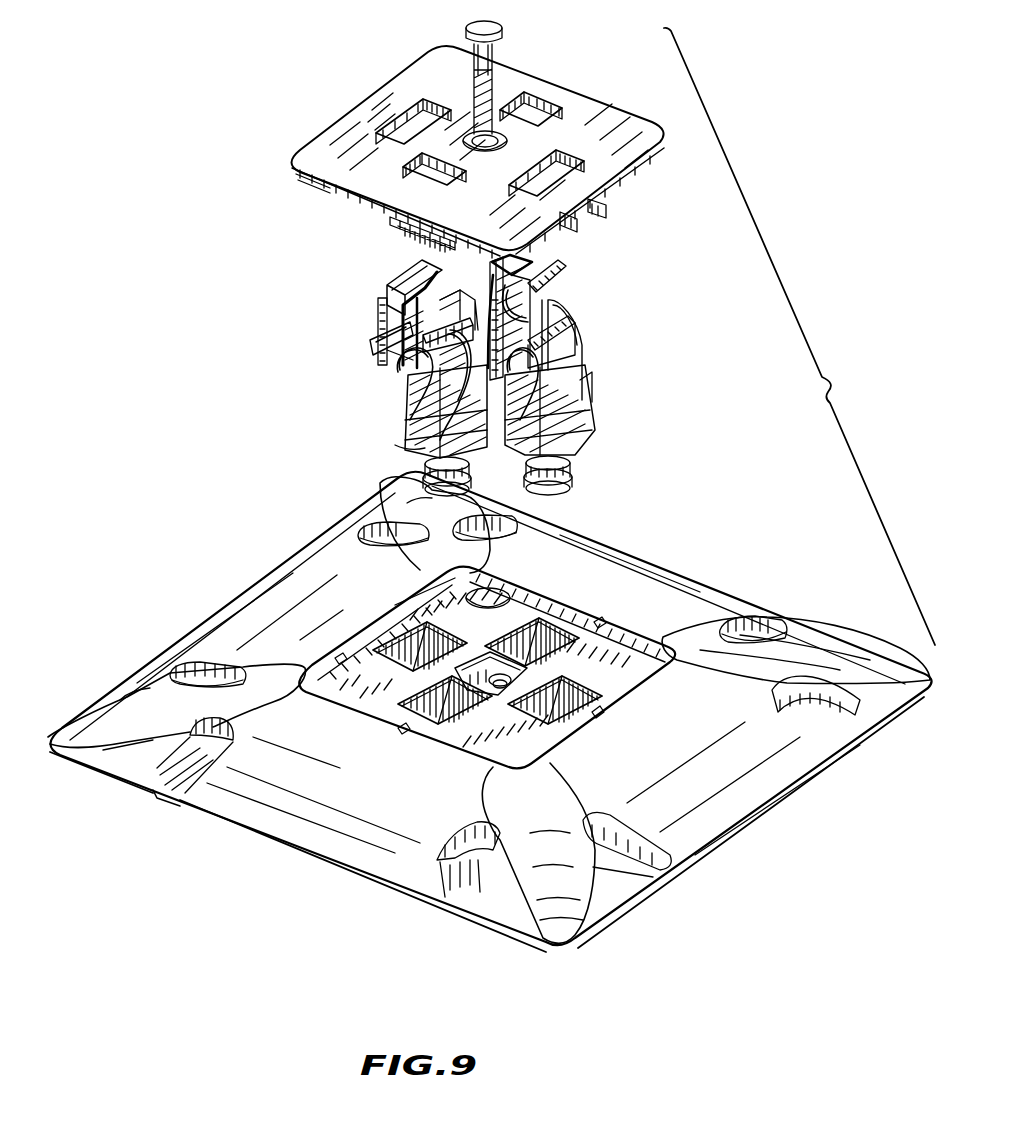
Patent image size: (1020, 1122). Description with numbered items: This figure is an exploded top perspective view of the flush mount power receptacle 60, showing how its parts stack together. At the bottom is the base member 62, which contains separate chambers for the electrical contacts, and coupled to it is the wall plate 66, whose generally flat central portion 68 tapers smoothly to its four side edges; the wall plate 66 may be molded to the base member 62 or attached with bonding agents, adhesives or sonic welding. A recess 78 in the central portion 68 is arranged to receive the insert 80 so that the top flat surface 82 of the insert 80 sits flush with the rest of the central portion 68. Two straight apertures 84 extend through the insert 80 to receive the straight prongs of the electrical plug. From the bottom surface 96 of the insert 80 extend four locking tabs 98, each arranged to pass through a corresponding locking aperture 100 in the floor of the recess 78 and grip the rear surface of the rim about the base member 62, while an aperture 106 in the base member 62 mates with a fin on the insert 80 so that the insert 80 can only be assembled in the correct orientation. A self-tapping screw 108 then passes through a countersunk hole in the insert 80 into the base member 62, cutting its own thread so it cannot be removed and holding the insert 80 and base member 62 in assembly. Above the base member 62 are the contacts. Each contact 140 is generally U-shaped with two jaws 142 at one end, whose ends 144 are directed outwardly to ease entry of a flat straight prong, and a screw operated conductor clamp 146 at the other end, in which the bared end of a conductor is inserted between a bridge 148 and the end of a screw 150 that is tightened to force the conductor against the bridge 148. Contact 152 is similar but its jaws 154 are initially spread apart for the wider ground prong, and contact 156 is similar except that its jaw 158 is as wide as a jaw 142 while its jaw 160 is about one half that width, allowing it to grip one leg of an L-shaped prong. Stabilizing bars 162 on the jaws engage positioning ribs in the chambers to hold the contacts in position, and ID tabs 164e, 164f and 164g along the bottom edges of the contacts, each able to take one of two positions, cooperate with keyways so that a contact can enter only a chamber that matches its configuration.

The flush mount power receptacle 60 is at (490, 696).
The base member 62 is at (640, 680).
The wall plate 66 is at (730, 598).
The central portion 68 is at (620, 560).
The recess 78 is at (405, 595).
The insert 80 is at (337, 122).
The top flat surface 82 is at (420, 70).
The straight apertures 84 is at (555, 178).
The bottom surface 96 is at (337, 190).
The locking tabs 98 is at (392, 228).
The locking aperture 100 is at (600, 625).
The aperture 106 is at (520, 583).
The self-tapping screw 108 is at (493, 72).
The contact 140 is at (388, 352).
The jaws 142 is at (568, 350).
The ends of the jaws 144 is at (560, 328).
The screw operated conductor clamp 146 is at (575, 425).
The bridge 148 is at (568, 480).
The screw 150 is at (568, 495).
The contact 152 is at (575, 298).
The jaws 154 is at (550, 283).
The contact 156 is at (400, 445).
The jaw 158 is at (385, 403).
The jaw 160 is at (380, 372).
The stabilizing bars 162 is at (385, 300).
The ID tab 164e is at (505, 539).
The ID tab 164f is at (364, 547).
The ID tab 164g is at (400, 440).